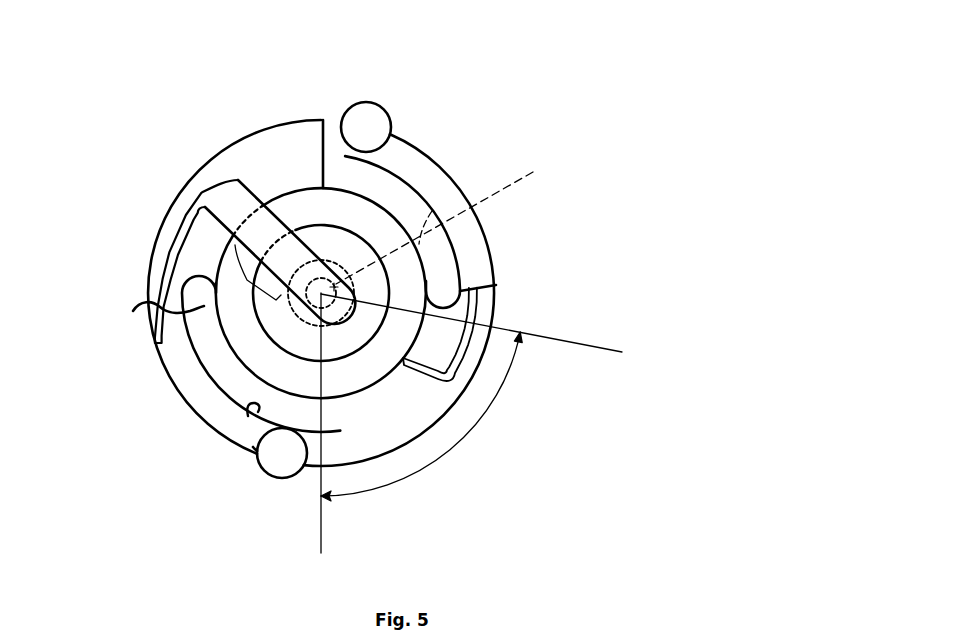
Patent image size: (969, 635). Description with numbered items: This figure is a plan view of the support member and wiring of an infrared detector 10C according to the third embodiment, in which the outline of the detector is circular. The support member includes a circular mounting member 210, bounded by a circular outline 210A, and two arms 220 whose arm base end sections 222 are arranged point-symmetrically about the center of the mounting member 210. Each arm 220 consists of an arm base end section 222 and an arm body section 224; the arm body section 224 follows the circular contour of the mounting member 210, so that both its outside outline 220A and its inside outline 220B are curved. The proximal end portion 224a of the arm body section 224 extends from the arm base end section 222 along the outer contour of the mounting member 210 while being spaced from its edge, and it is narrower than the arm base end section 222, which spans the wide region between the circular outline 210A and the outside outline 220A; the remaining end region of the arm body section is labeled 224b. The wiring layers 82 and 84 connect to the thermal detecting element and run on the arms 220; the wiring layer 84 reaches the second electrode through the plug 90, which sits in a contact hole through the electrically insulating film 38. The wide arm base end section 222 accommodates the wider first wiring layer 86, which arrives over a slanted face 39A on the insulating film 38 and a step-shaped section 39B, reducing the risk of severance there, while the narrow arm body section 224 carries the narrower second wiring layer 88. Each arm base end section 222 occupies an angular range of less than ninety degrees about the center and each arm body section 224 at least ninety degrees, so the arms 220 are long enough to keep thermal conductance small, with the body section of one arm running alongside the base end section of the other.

The infrared detector 10C is at (545, 83).
The mounting member 210 is at (377, 383).
The electrically insulating film 38 is at (321, 293).
The circular outline of the mounting member 210A is at (303, 187).
The wiring layer 82 is at (470, 368).
The plug (electrode contact) 90 is at (447, 223).
The arm 220 is at (630, 233).
The outside outline of the arm 220A is at (211, 155).
The inside outline of the arm 220B is at (250, 411).
The arm body section 224 is at (496, 240).
The proximal end portion of the arm body section 224a is at (488, 276).
The knob end of arm portion 224b is at (402, 143).
The arm base end section 222 is at (483, 297).
The slanted face 39A is at (253, 282).
The step-shaped section 39B is at (238, 179).
The wiring layer 84 is at (56, 200).
The first wiring layer 86 is at (238, 210).
The second wiring layer 88 is at (235, 244).